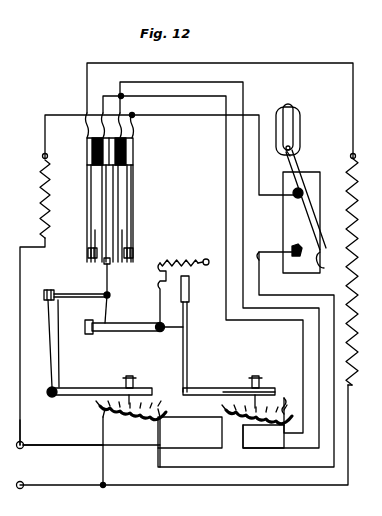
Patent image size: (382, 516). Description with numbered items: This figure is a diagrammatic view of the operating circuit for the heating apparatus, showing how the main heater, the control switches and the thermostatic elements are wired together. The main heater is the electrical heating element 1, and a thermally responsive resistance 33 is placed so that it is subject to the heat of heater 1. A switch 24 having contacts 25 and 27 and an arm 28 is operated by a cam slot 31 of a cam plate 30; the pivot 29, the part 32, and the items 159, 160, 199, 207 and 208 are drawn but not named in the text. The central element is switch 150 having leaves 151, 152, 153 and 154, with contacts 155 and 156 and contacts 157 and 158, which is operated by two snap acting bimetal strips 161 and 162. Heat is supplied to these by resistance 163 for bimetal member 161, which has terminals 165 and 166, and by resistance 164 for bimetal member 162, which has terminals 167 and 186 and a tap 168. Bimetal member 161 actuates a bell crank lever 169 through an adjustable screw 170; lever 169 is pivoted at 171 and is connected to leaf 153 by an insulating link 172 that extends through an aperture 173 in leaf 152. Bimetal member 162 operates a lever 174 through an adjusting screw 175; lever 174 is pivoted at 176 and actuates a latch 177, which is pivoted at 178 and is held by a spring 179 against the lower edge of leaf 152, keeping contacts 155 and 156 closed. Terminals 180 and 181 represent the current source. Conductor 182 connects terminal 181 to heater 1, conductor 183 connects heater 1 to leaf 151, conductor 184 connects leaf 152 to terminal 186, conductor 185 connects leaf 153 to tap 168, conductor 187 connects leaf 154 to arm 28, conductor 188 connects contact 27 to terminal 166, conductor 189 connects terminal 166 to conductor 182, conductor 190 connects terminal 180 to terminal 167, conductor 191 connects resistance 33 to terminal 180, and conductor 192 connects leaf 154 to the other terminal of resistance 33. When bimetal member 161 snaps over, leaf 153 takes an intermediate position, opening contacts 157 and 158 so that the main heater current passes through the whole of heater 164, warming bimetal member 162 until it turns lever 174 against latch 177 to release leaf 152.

The electrical heating element 1 is at (358, 238).
The switch 24 is at (278, 209).
The contact 25 is at (327, 266).
The contact 27 is at (292, 255).
The arm 28 is at (302, 172).
The pivot 29 is at (303, 193).
The cam plate 30 is at (300, 131).
The cam slot 31 is at (281, 114).
The link 32 is at (286, 154).
The thermally responsive resistance 33 is at (40, 172).
The switch 150 is at (133, 150).
The leaf 151 is at (87, 180).
The leaf 152 is at (102, 208).
The leaf 153 is at (113, 196).
The leaf 154 is at (133, 178).
The contact 155 is at (88, 252).
The contact 156 is at (104, 262).
The contact 157 is at (95, 240).
The contact 158 is at (122, 240).
The spring 159 is at (163, 292).
The contact 160 is at (133, 243).
The bimetal strip 161 is at (100, 408).
The bimetal strip 162 is at (226, 410).
The resistance 163 is at (131, 431).
The resistance 164 is at (248, 392).
The terminal 165 is at (103, 420).
The terminal 166 is at (190, 432).
The terminal 167 is at (190, 448).
The tap 168 is at (263, 436).
The bell crank lever 169 is at (58, 362).
The adjustable screw 170 is at (126, 380).
The pivot 171 is at (49, 396).
The insulating link 172 is at (86, 298).
The aperture 173 is at (110, 310).
The lever 174 is at (188, 345).
The adjusting screw 175 is at (258, 370).
The pivot 176 is at (190, 386).
The latch 177 is at (132, 332).
The pivot 178 is at (161, 332).
The spring 179 is at (204, 258).
The terminal 180 is at (60, 437).
The terminal 181 is at (20, 489).
The conductor 182 is at (334, 487).
The conductor 183 is at (326, 66).
The conductor 184 is at (114, 94).
The conductor 185 is at (211, 245).
The terminal 186 is at (302, 398).
The conductor 187 is at (219, 117).
The conductor 188 is at (272, 245).
The conductor 189 is at (105, 466).
The conductor 190 is at (82, 448).
The conductor 191 is at (20, 370).
The conductor 192 is at (55, 114).
The tab 199 is at (90, 334).
The link 207 is at (46, 300).
The contact 208 is at (44, 296).